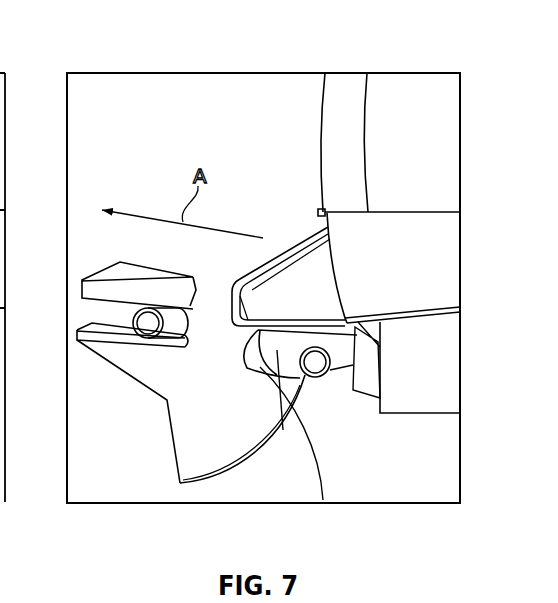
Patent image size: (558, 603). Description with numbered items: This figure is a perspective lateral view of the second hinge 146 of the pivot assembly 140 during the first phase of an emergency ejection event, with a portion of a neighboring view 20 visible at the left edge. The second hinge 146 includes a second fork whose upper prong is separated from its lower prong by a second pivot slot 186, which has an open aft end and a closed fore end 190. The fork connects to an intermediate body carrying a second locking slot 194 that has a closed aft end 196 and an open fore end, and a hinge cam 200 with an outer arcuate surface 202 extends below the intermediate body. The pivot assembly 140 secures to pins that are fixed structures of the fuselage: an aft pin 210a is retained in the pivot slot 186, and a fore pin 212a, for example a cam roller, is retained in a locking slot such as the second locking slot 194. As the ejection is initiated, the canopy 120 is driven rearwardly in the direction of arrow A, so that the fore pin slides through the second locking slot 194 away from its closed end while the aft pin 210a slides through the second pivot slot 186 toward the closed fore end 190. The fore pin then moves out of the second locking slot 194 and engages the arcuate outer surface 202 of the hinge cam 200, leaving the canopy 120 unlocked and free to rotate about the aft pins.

The adjacent figure portion 20 is at (1, 63).
The canopy 120 is at (405, 108).
The pivot assembly 140 is at (98, 253).
The second pivot slot 186 is at (103, 316).
The closed fore end 190 is at (205, 320).
The aft pin 210a is at (148, 323).
The second hinge 146 is at (160, 455).
The second locking slot 194 is at (285, 410).
The fore pin 212a is at (340, 357).
The hinge cam 200 is at (225, 478).
The closed aft end 196 is at (279, 430).
The outer arcuate surface 202 is at (323, 500).